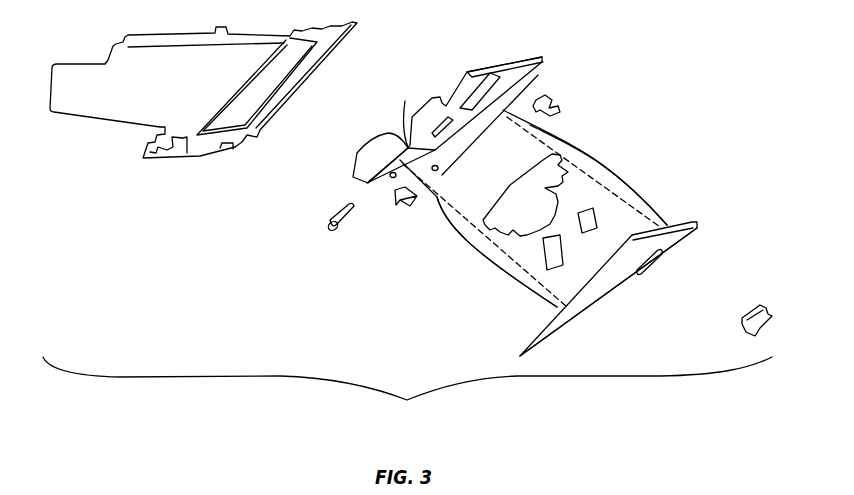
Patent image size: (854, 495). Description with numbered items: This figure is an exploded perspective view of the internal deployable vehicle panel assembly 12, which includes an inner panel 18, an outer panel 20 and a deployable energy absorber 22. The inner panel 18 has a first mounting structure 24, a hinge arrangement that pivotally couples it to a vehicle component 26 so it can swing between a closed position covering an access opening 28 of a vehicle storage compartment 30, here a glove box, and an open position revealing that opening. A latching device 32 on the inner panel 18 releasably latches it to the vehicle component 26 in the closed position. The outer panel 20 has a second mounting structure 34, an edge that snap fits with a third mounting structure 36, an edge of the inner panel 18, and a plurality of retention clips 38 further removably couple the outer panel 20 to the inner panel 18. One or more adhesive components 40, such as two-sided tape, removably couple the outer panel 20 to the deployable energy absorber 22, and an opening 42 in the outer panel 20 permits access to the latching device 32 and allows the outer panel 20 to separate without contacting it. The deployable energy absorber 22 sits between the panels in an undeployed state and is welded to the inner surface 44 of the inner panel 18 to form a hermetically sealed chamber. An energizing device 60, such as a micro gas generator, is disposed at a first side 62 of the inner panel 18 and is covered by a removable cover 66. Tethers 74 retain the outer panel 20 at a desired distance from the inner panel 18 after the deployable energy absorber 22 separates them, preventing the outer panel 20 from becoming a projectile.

The internal deployable vehicle panel assembly 12 is at (407, 394).
The inner panel 18 is at (538, 74).
The outer panel 20 is at (675, 260).
The deployable energy absorber 22 is at (566, 188).
The first mounting structure 24 is at (438, 170).
The vehicle component 26 is at (190, 150).
The access opening 28 is at (287, 70).
The vehicle storage compartment 30 is at (134, 130).
The latching device 32 is at (742, 318).
The second mounting structure 34 is at (693, 222).
The third mounting structure 36 is at (541, 60).
The retention clips 38 is at (553, 113).
The adhesive components 40 is at (587, 233).
The opening 42 is at (638, 273).
The inner surface 44 is at (467, 132).
The energizing device 60 is at (335, 210).
The first side 62 is at (407, 114).
The removable cover 66 is at (357, 153).
The tethers 74 is at (489, 266).